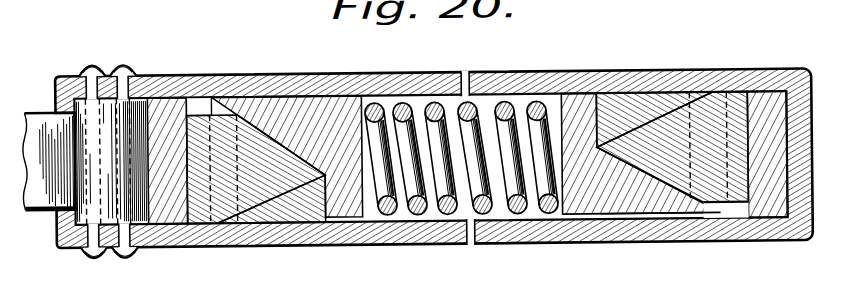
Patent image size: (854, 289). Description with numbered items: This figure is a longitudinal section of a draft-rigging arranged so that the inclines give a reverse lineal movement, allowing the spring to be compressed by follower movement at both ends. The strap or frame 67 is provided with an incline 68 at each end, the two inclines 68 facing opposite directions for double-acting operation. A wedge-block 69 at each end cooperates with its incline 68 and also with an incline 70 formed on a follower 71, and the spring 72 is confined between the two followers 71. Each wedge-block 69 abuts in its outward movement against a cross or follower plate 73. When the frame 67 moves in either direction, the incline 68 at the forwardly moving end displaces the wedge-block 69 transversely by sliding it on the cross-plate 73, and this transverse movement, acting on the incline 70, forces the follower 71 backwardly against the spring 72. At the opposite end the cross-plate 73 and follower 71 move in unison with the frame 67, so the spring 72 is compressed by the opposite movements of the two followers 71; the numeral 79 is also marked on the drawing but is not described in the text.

The strap or frame 67 is at (417, 149).
The incline 68 is at (313, 206).
The wedge-block 69 is at (248, 198).
The incline 70 is at (281, 94).
The follower 71 is at (320, 96).
The spring 72 is at (535, 108).
The cross or follower plate 73 is at (182, 210).
The seat 79 is at (652, 205).